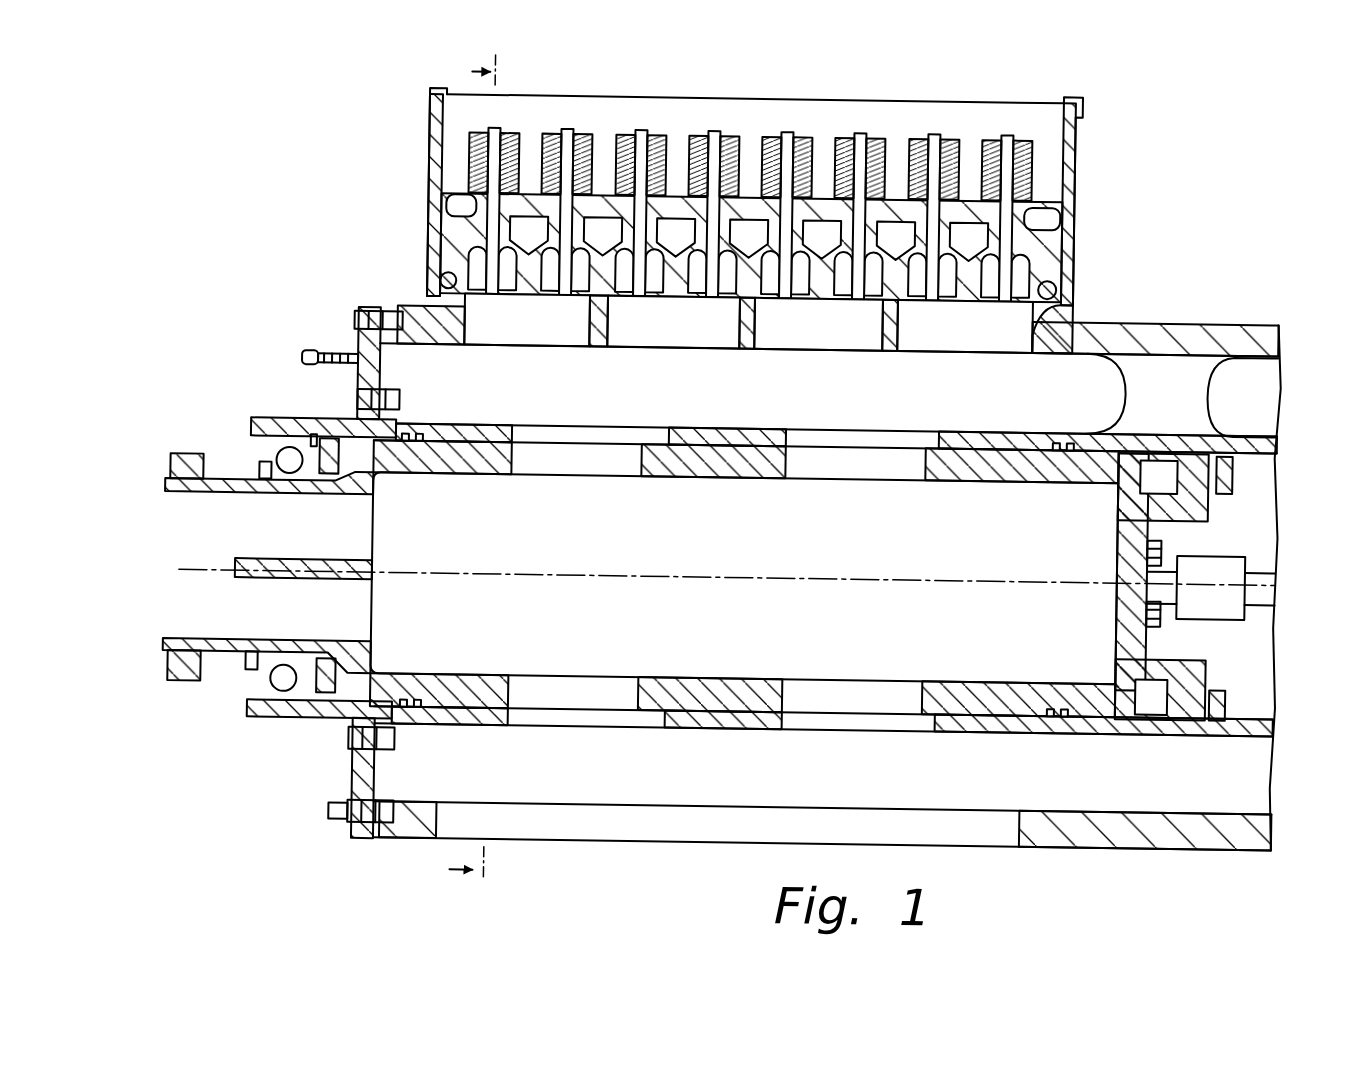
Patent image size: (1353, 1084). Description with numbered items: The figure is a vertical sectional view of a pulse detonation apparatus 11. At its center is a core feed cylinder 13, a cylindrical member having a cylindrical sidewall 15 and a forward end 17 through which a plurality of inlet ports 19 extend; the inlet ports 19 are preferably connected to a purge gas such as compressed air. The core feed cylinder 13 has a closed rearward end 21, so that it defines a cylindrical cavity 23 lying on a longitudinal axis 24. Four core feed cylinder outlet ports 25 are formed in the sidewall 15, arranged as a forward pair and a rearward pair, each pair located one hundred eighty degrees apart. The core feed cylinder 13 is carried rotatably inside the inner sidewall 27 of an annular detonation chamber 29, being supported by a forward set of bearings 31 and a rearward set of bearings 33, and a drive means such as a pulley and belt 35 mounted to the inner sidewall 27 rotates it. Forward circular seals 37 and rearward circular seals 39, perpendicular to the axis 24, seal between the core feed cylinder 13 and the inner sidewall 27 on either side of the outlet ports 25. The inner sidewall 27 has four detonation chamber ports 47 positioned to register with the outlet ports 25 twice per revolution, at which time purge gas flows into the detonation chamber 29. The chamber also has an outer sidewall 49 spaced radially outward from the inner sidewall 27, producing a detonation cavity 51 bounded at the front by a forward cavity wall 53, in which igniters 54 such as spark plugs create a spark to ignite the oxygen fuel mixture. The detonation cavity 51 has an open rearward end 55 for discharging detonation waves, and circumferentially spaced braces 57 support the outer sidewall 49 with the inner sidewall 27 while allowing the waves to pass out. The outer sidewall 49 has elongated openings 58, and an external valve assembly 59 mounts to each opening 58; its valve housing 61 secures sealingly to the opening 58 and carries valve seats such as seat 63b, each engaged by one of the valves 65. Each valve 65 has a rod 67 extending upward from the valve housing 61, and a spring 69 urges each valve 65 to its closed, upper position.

The pulse detonation apparatus 11 is at (1246, 224).
The core feed cylinder 13 is at (950, 470).
The cylindrical sidewall 15 is at (710, 430).
The forward end 17 is at (374, 486).
The inlet ports 19 is at (360, 563).
The rearward end 21 is at (1120, 651).
The cylindrical cavity 23 is at (740, 543).
The longitudinal axis 24 is at (835, 577).
The core feed cylinder outlet ports 25 is at (645, 470).
The inner sidewall 27 is at (988, 430).
The annular detonation chamber 29 is at (1176, 845).
The forward set of bearings 31 is at (280, 464).
The rearward set of bearings 33 is at (1162, 470).
The pulley and belt 35 is at (188, 460).
The forward circular seals 37 is at (416, 432).
The rearward circular seals 39 is at (1074, 432).
The detonation chamber ports 47 is at (672, 430).
The outer sidewall 49 is at (1208, 318).
The detonation cavity 51 is at (836, 401).
The forward cavity wall 53 is at (378, 384).
The igniters 54 is at (320, 356).
The open rearward end 55 is at (1134, 806).
The braces 57 is at (1196, 382).
The elongated openings 58 is at (1060, 325).
The external valve assembly 59 is at (1068, 237).
The valve housing 61 is at (440, 244).
The valve seat 63b is at (512, 298).
The valves 65 is at (476, 318).
The rod 67 is at (480, 161).
The spring 69 is at (476, 191).